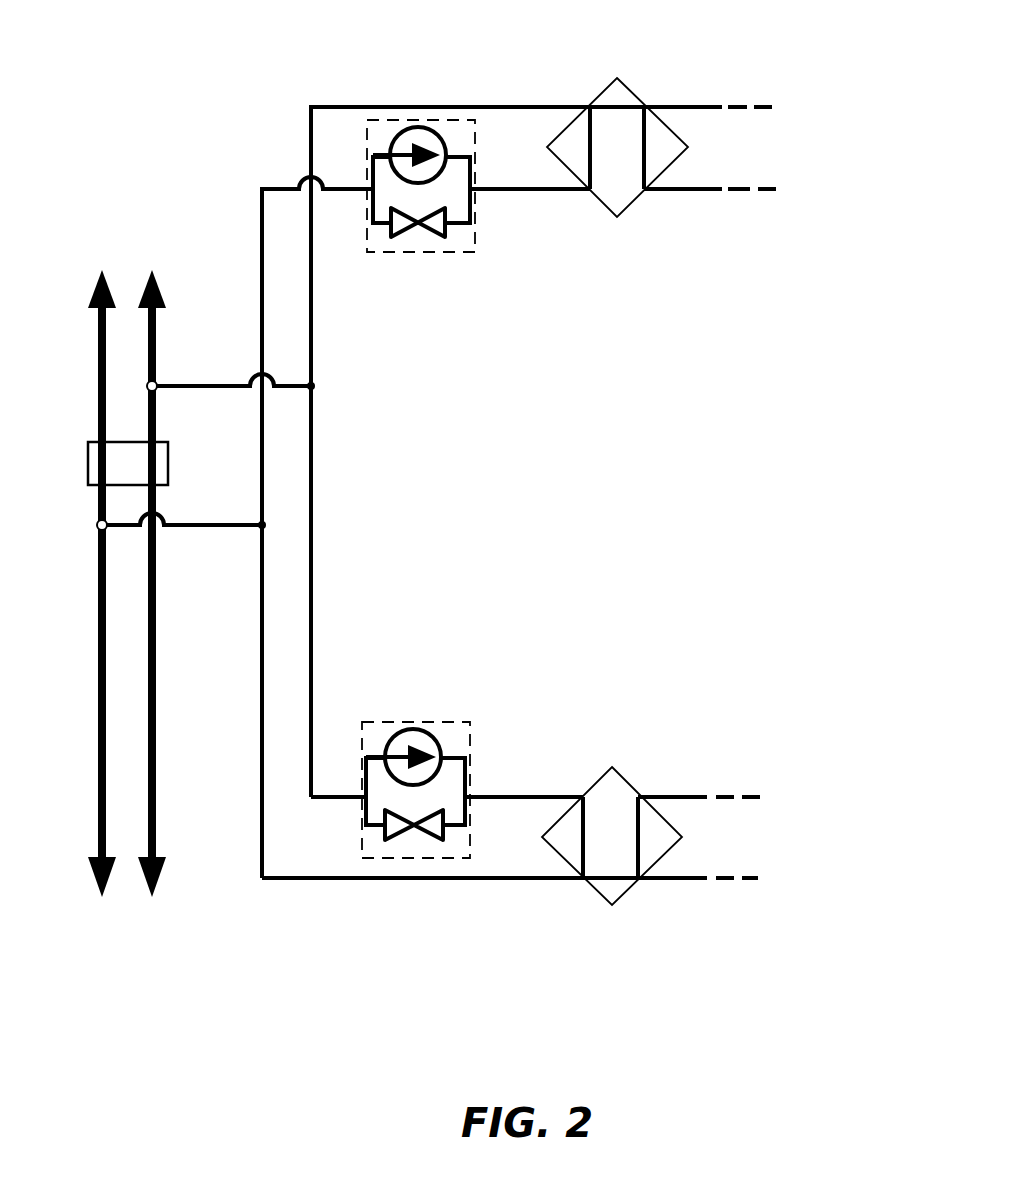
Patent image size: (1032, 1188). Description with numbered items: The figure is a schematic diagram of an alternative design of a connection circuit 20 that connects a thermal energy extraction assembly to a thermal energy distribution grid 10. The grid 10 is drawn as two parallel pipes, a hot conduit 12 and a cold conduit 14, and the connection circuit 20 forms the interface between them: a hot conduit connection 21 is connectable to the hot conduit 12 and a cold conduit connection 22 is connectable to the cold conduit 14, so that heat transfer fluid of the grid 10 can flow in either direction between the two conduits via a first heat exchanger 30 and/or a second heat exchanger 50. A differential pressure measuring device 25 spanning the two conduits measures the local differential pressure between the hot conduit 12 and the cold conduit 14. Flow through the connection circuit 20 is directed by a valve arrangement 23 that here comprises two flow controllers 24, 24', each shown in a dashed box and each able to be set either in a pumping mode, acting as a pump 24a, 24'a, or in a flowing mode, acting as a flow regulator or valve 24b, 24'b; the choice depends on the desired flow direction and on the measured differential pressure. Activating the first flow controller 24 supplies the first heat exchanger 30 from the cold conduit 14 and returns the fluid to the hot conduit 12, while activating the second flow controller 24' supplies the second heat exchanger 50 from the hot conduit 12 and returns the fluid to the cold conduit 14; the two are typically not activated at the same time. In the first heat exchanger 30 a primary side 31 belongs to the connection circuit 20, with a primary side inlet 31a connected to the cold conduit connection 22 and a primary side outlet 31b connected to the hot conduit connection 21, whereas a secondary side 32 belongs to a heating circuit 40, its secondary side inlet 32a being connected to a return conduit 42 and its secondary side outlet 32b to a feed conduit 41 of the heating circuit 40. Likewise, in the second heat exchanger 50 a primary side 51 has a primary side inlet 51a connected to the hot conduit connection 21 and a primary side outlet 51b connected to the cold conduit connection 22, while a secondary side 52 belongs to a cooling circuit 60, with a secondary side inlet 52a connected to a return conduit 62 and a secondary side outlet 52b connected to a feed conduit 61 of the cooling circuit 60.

The thermal energy distribution grid 10 is at (150, 651).
The hot conduit 12 is at (156, 600).
The cold conduit 14 is at (108, 350).
The connection circuit 20 is at (409, 561).
The hot conduit connection 21 is at (186, 390).
The cold conduit connection 22 is at (188, 530).
The valve arrangement 23 is at (405, 918).
The first flow controller 24 is at (478, 189).
The pump 24a is at (420, 134).
The valve 24b is at (435, 232).
The second flow controller 24' is at (435, 758).
The pump 24'a is at (453, 744).
The valve 24'b is at (365, 830).
The differential pressure measuring device 25 is at (115, 452).
The first heat exchanger 30 is at (594, 127).
The primary side 31 is at (589, 88).
The primary side inlet 31a is at (583, 192).
The primary side outlet 31b is at (590, 106).
The secondary side 32 is at (645, 88).
The secondary side inlet 32a is at (650, 106).
The secondary side outlet 32b is at (650, 192).
The heating circuit 40 is at (762, 142).
The feed conduit 41 is at (768, 192).
The return conduit 42 is at (762, 103).
The second heat exchanger 50 is at (593, 857).
The primary side 51 is at (578, 900).
The primary side inlet 51a is at (583, 795).
The primary side outlet 51b is at (568, 880).
The secondary side 52 is at (638, 902).
The secondary side inlet 52a is at (650, 880).
The secondary side outlet 52b is at (645, 795).
The cooling circuit 60 is at (766, 847).
The feed conduit 61 is at (748, 794).
The return conduit 62 is at (745, 882).